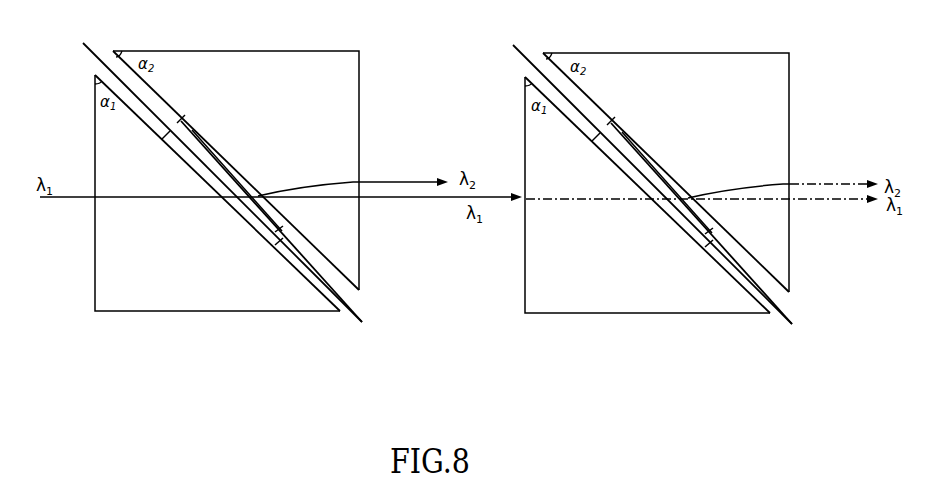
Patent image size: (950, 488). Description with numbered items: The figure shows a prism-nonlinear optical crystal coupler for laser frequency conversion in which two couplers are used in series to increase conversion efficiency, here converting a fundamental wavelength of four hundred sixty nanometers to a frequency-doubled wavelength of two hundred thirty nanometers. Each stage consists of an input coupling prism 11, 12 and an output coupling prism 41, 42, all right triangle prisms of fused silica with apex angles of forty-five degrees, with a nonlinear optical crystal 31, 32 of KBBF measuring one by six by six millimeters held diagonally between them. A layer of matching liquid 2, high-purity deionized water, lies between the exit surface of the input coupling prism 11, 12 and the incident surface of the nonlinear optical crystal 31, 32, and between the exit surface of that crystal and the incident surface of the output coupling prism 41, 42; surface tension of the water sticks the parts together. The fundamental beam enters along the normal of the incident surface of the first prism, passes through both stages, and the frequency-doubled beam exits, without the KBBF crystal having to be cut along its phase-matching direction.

The matching liquid 2 is at (397, 323).
The input coupling prism 11 is at (125, 268).
The input coupling prism 12 is at (555, 270).
The nonlinear optical crystal 31 is at (102, 43).
The nonlinear optical crystal 32 is at (533, 45).
The output coupling prism 41 is at (335, 127).
The output coupling prism 42 is at (766, 131).